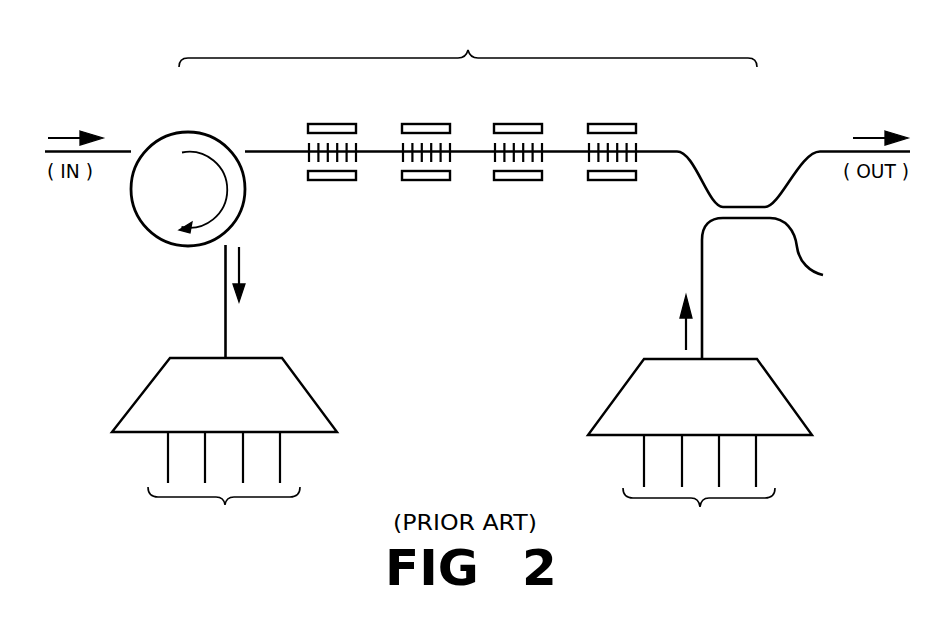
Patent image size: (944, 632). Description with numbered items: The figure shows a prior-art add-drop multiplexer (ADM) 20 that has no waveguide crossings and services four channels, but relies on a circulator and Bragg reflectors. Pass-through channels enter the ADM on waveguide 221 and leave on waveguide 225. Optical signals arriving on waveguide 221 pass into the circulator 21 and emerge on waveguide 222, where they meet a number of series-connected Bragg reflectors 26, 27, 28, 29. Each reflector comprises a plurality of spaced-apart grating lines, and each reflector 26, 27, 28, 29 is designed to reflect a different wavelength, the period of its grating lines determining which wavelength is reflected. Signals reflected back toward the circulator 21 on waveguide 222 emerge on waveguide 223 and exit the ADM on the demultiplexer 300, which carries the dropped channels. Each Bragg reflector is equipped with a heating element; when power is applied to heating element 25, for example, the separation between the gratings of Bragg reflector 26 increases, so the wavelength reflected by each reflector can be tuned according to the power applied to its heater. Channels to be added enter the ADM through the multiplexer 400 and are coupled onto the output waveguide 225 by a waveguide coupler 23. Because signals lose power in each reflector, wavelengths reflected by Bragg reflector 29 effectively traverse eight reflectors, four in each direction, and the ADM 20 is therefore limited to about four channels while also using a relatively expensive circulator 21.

The add-drop multiplexer 20 is at (468, 88).
The circulator 21 is at (187, 132).
The waveguide 221 is at (130, 150).
The waveguide 222 is at (273, 150).
The waveguide 223 is at (225, 320).
The waveguide 225 is at (842, 150).
The waveguide coupler 23 is at (737, 205).
The heating element 25 is at (308, 128).
The Bragg reflector 26 is at (360, 157).
The Bragg reflector 27 is at (453, 157).
The Bragg reflector 28 is at (545, 157).
The Bragg reflector 29 is at (639, 157).
The demultiplexer 300 is at (169, 358).
The multiplexer 400 is at (757, 359).